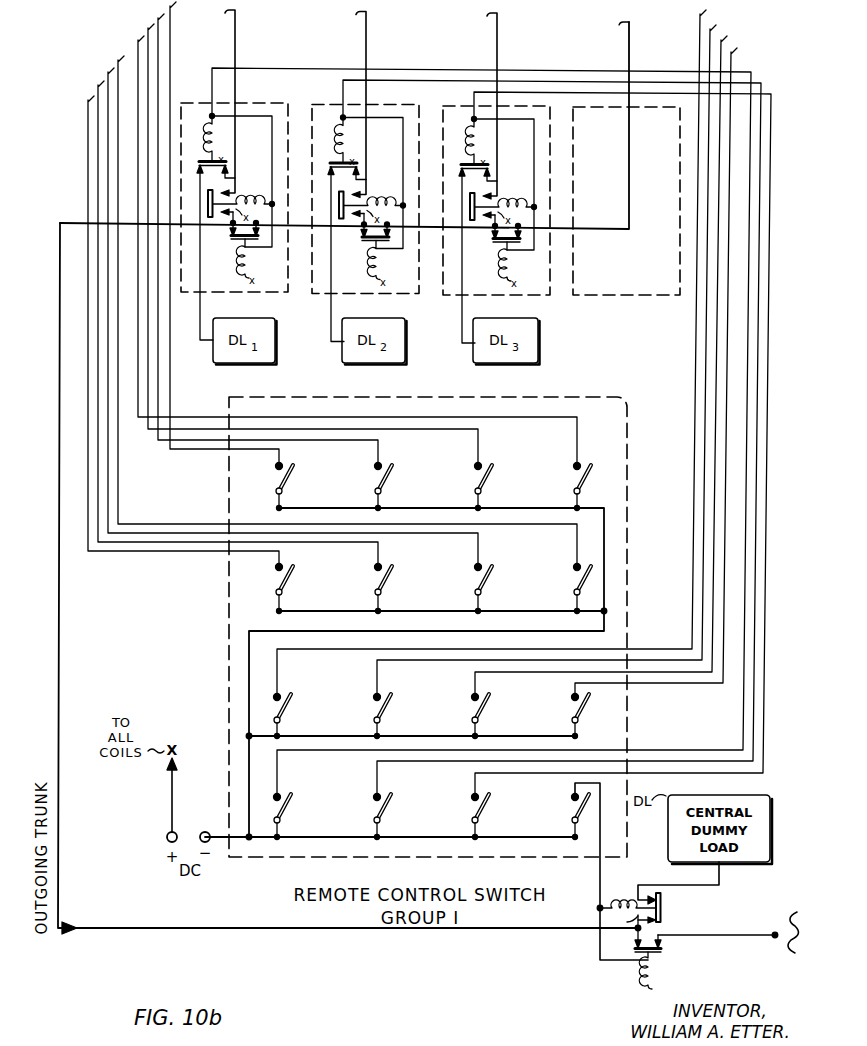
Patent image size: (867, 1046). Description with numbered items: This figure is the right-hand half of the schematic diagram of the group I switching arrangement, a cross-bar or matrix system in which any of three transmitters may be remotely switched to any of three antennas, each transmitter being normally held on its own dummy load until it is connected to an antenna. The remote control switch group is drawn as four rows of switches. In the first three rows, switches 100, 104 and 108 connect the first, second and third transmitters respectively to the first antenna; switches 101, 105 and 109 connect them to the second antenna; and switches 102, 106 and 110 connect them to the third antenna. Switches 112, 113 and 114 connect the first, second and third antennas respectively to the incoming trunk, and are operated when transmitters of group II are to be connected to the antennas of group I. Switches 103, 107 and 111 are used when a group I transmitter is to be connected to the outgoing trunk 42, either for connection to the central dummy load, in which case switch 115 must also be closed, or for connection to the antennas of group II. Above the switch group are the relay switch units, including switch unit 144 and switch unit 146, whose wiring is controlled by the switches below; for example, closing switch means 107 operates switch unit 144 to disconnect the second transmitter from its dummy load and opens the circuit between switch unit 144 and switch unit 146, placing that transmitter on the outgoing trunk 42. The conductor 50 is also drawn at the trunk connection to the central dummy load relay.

The switch 100 is at (279, 477).
The switch 101 is at (279, 580).
The switch 102 is at (280, 693).
The switch 103 is at (280, 793).
The switch 104 is at (378, 477).
The switch 105 is at (378, 580).
The switch means 106 is at (375, 707).
The switch means 107 is at (375, 810).
The switch 108 is at (478, 477).
The switch 109 is at (478, 580).
The switch 110 is at (473, 707).
The switch 111 is at (473, 810).
The switch 112 is at (577, 477).
The switch 113 is at (577, 580).
The switch 114 is at (573, 707).
The switch 115 is at (573, 810).
The switch unit 144 is at (341, 104).
The switch unit 146 is at (464, 104).
The outgoing line conductor 50 is at (775, 935).
The outgoing trunk 42 is at (745, 938).